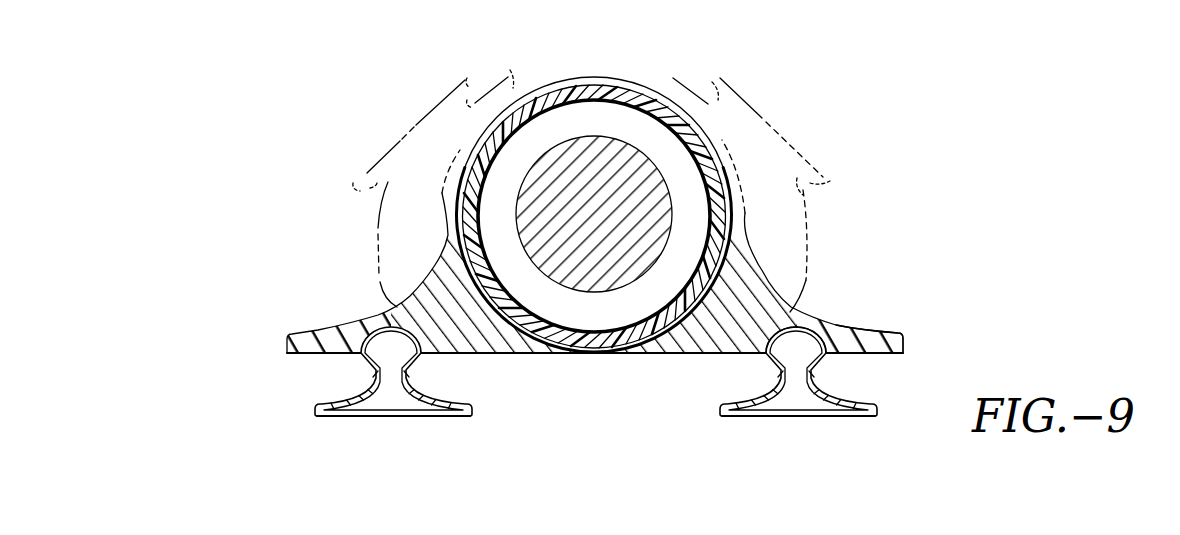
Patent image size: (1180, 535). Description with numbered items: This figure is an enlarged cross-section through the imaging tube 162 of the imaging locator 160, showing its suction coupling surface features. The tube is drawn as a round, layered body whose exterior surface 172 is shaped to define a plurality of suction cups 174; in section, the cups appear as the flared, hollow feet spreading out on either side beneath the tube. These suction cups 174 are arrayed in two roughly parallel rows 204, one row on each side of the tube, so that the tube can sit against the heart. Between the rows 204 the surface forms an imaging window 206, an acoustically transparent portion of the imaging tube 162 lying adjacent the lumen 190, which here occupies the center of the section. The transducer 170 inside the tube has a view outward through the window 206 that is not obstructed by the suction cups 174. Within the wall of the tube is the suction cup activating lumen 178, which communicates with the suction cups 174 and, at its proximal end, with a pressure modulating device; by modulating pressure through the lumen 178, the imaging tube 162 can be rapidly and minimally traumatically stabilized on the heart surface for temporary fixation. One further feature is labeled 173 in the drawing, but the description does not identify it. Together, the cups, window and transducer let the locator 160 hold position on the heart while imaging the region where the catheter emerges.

The imaging locator 160 is at (481, 134).
The imaging tube 162 is at (474, 145).
The transducer 170 is at (728, 215).
The exterior surface 172 is at (380, 288).
The flange 173 is at (510, 74).
The suction cups 174 is at (367, 172).
The suction cup activating lumen 178 is at (796, 330).
The lumen 190 is at (493, 211).
The rows 204 is at (462, 440).
The imaging window 206 is at (630, 354).